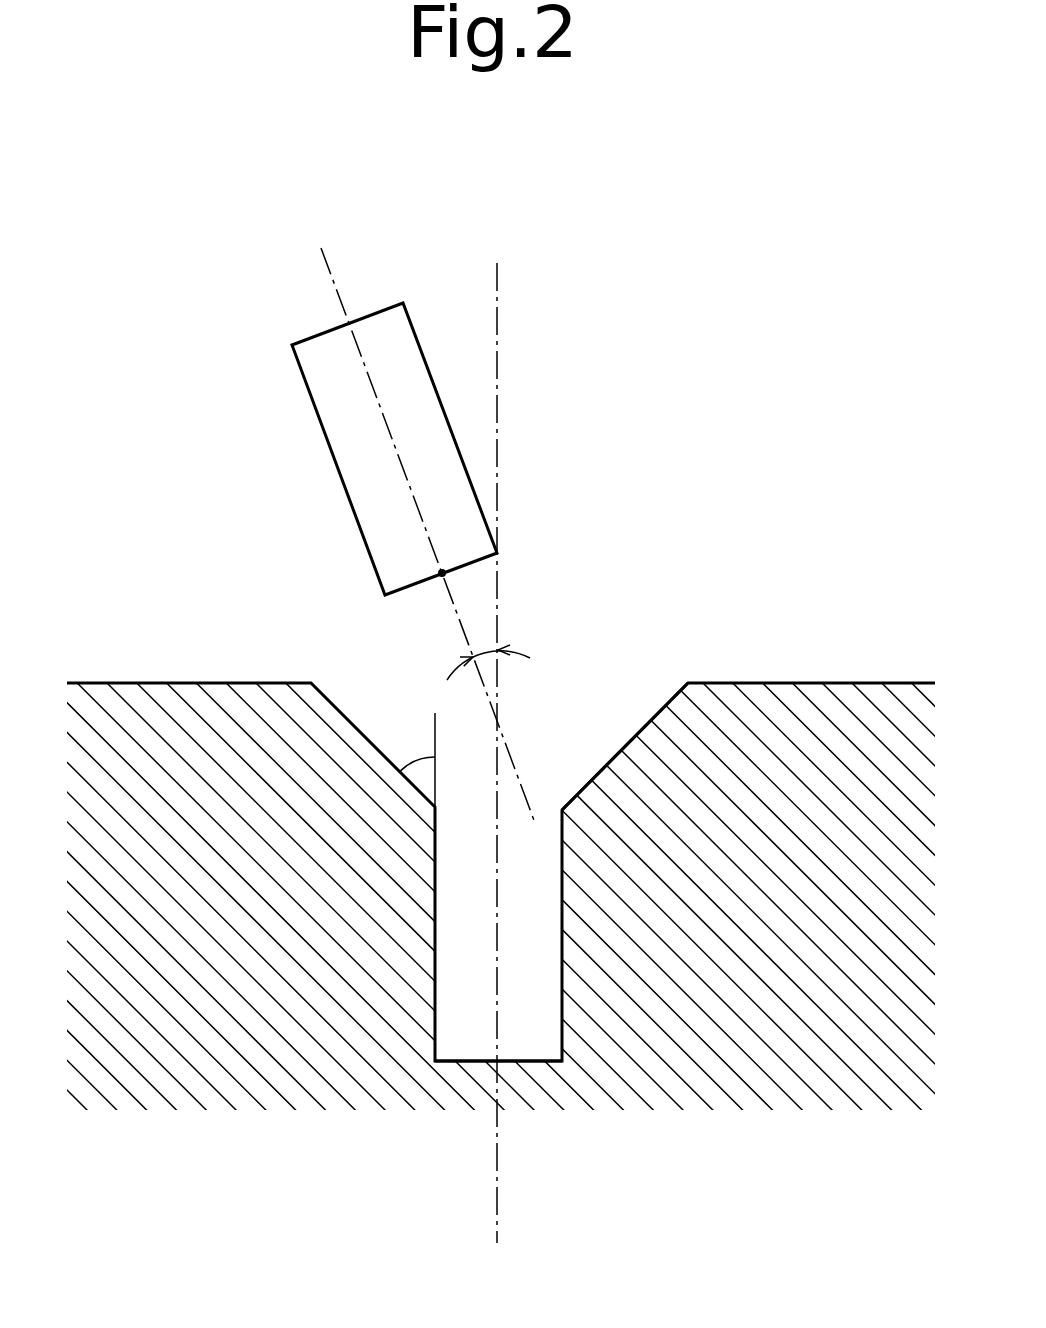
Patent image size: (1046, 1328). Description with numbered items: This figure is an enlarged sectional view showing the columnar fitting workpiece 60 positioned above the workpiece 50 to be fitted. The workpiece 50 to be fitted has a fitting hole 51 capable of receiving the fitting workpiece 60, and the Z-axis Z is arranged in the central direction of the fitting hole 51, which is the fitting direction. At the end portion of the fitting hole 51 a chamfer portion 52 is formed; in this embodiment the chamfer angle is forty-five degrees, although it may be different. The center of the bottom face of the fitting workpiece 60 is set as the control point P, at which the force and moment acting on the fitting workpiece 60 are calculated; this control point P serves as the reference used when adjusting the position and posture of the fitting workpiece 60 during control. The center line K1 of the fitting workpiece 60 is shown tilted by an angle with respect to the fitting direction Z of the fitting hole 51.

The workpiece to be fitted 50 is at (828, 740).
The fitting hole 51 is at (458, 1040).
The chamfer portion 52 is at (667, 703).
The fitting workpiece 60 is at (393, 343).
The center line K1 is at (333, 268).
The Z-axis Z is at (502, 290).
The control point P is at (440, 580).